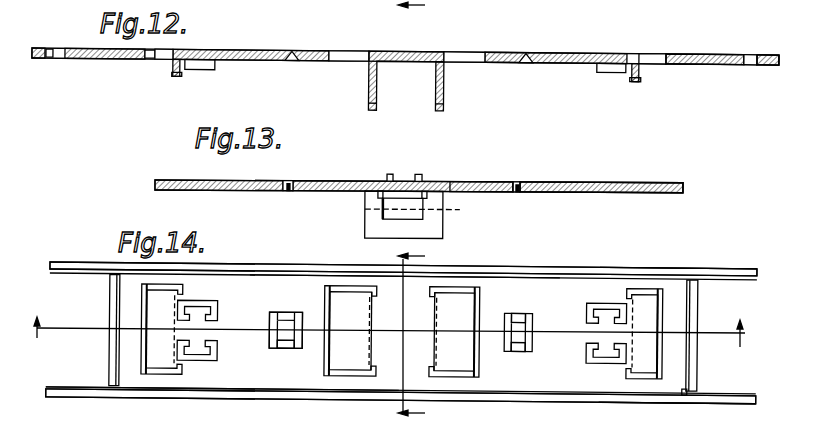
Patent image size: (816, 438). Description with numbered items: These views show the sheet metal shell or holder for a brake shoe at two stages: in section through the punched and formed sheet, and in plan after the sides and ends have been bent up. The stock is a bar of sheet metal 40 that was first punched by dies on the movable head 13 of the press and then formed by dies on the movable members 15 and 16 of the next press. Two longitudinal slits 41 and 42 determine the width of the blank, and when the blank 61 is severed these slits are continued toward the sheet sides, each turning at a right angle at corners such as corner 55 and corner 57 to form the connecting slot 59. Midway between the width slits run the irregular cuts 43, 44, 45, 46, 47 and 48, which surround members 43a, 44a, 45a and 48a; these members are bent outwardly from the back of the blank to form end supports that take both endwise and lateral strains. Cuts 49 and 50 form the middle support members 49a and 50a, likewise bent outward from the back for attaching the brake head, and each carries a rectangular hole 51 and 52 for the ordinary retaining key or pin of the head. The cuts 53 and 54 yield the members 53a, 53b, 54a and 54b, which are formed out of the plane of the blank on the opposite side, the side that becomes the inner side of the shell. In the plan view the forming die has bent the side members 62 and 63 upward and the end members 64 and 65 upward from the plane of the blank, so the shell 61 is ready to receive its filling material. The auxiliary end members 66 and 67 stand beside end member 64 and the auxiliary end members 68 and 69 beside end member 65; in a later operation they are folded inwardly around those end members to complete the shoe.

In FIG. 12, the movable head 13 is at (418, 36).
In FIG. 14, the movable member of press 15 is at (775, 338).
In FIG. 14, the movable member of press 16 is at (406, 335).
In FIG. 13, the bar of sheet metal 40 is at (592, 180).
In FIG. 13, the slit 41 is at (518, 191).
In FIG. 13, the slit 42 is at (288, 191).
In FIG. 12, the cut 43 is at (151, 59).
In FIG. 14, the cut 43 is at (148, 300).
In FIG. 12, the attaching member 43a is at (164, 79).
In FIG. 12, the cut 44 is at (648, 56).
In FIG. 14, the cut 44 is at (650, 303).
In FIG. 12, the attaching member 44a is at (636, 86).
In FIG. 14, the cut 45 is at (607, 320).
In FIG. 12, the attaching member 45a is at (604, 73).
In FIG. 14, the cut 46 is at (607, 346).
In FIG. 14, the cut 47 is at (195, 352).
In FIG. 14, the cut 48 is at (191, 315).
In FIG. 12, the attaching member 48a is at (200, 67).
In FIG. 12, the cut 49 is at (462, 56).
In FIG. 14, the cut 49 is at (454, 332).
In FIG. 12, the middle support member 49a is at (441, 103).
In FIG. 14, the middle support member 49a is at (437, 352).
In FIG. 12, the cut 50 is at (346, 54).
In FIG. 14, the cut 50 is at (350, 331).
In FIG. 12, the middle support member 50a is at (380, 109).
In FIG. 13, the middle support member 50a is at (366, 226).
In FIG. 14, the middle support member 50a is at (365, 340).
In FIG. 12, the rectangular hole 51 is at (368, 81).
In FIG. 13, the rectangular hole 51 is at (415, 216).
In FIG. 12, the rectangular hole 52 is at (445, 82).
In FIG. 14, the cut 53 is at (272, 327).
In FIG. 13, the inner side member 53a is at (388, 175).
In FIG. 14, the inner side member 53a is at (282, 347).
In FIG. 12, the inner side member 53b is at (293, 48).
In FIG. 13, the inner side member 53b is at (432, 158).
In FIG. 14, the cut 54 is at (522, 332).
In FIG. 14, the inner side member 54a is at (520, 351).
In FIG. 12, the inner side member 54b is at (527, 52).
In FIG. 14, the inner side member 54b is at (513, 325).
In FIG. 12, the corner 55 is at (47, 59).
In FIG. 12, the corner 57 is at (749, 33).
In FIG. 12, the connecting slot 59 is at (760, 58).
In FIG. 13, the shell blank 61 is at (486, 168).
In FIG. 14, the shell blank 61 is at (279, 315).
In FIG. 14, the side member 62 is at (173, 402).
In FIG. 14, the side member 63 is at (269, 262).
In FIG. 14, the end member 64 is at (110, 293).
In FIG. 12, the end member 65 is at (712, 67).
In FIG. 14, the end member 65 is at (700, 306).
In FIG. 14, the auxiliary end member 66 is at (66, 262).
In FIG. 14, the auxiliary end member 67 is at (62, 382).
In FIG. 14, the auxiliary end member 68 is at (723, 270).
In FIG. 14, the auxiliary end member 69 is at (727, 396).